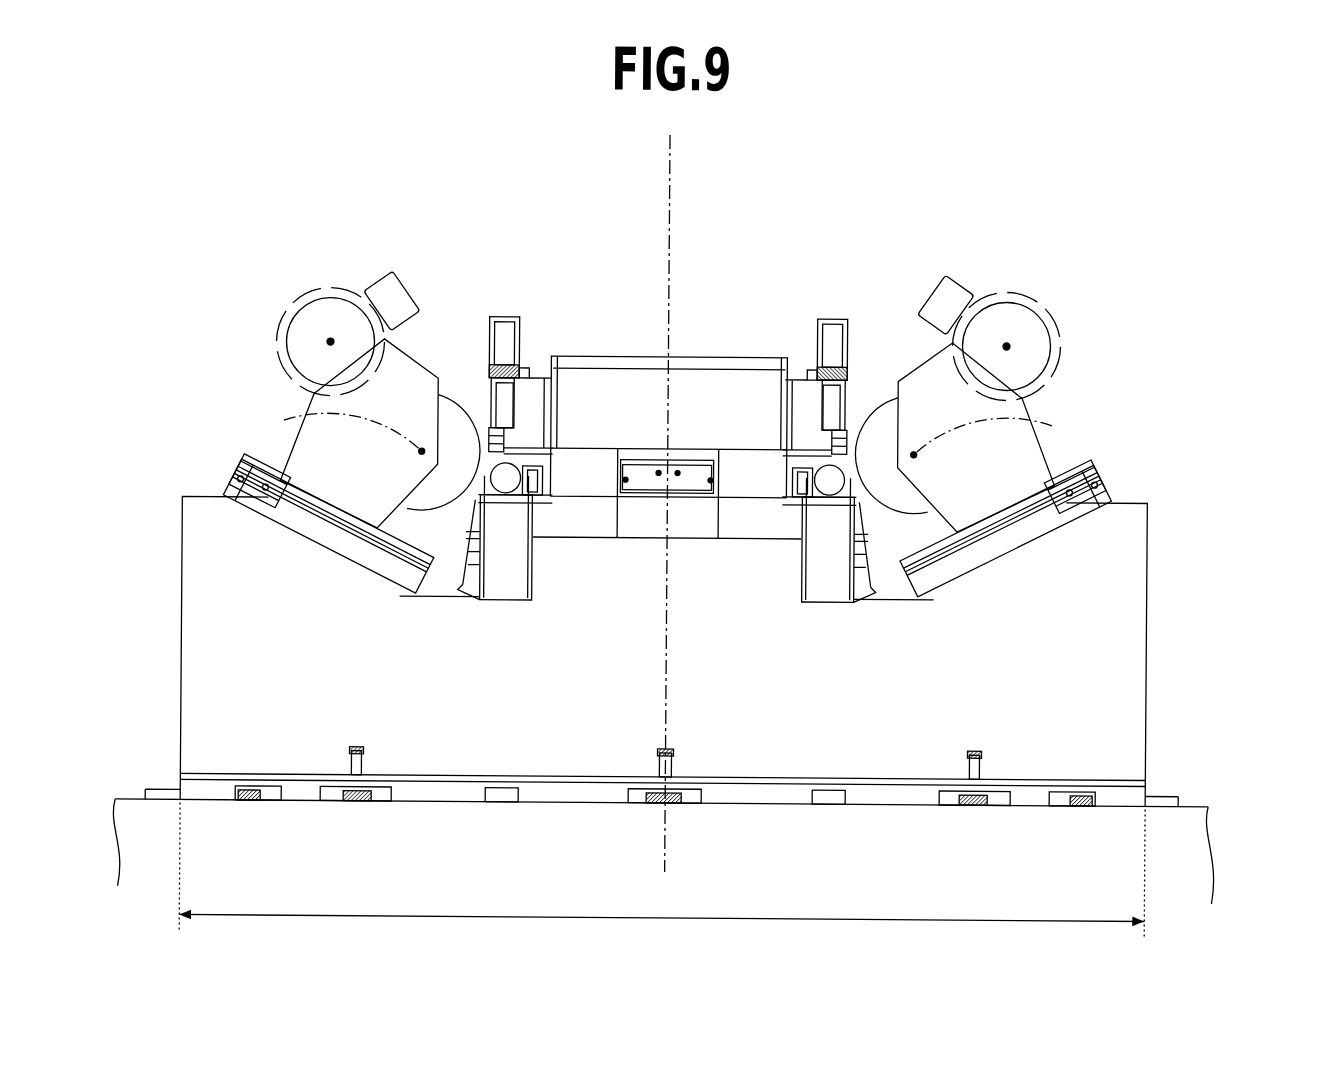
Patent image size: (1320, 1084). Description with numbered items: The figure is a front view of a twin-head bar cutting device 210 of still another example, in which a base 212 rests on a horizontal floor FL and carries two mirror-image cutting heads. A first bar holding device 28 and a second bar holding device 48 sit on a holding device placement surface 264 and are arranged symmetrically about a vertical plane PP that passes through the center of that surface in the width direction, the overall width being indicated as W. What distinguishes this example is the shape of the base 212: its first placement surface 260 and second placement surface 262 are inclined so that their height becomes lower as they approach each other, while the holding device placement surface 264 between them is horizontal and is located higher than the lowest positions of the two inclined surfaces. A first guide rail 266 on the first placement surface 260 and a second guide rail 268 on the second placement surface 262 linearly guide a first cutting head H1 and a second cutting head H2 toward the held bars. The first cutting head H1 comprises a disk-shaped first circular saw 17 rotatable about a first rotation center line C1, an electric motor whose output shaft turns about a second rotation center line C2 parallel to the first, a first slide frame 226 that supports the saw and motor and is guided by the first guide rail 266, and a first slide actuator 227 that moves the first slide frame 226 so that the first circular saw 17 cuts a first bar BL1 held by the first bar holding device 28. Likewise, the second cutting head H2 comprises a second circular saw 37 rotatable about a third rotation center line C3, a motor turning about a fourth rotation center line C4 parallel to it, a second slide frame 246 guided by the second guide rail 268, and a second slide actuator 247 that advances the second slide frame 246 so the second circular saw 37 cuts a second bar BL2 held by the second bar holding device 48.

The twin-head bar cutting device 210 is at (1108, 95).
The base 212 is at (215, 712).
The first circular saw 17 is at (462, 420).
The second circular saw 37 is at (872, 433).
The first bar holding device 28 is at (476, 310).
The second bar holding device 48 is at (858, 310).
The first slide frame 226 is at (297, 463).
The second slide frame 246 is at (1037, 463).
The first slide actuator 227 is at (230, 477).
The second slide actuator 247 is at (1104, 477).
The first placement surface 260 is at (330, 540).
The second placement surface 262 is at (1004, 540).
The first guide rail 266 is at (415, 543).
The second guide rail 268 is at (919, 543).
The holding device placement surface 264 is at (684, 528).
The first bar BL1 is at (505, 490).
The second bar BL2 is at (829, 490).
The first rotation center line C1 is at (336, 431).
The second rotation center line C2 is at (329, 344).
The third rotation center line C3 is at (1000, 436).
The fourth rotation center line C4 is at (1005, 344).
The first cutting head H1 is at (270, 392).
The second cutting head H2 is at (1064, 392).
The floor FL is at (1196, 803).
The vertical plane PP is at (669, 848).
The width W is at (662, 878).